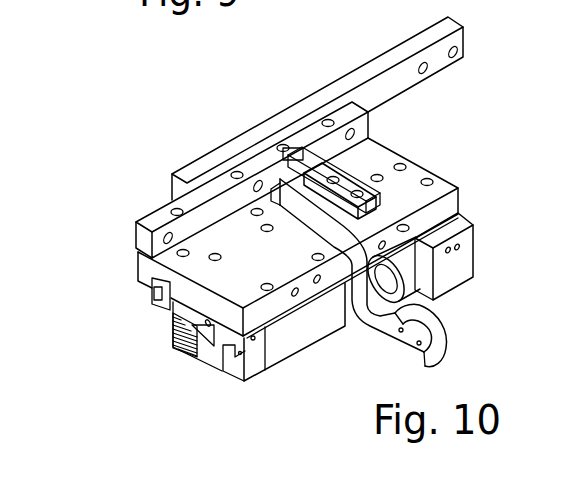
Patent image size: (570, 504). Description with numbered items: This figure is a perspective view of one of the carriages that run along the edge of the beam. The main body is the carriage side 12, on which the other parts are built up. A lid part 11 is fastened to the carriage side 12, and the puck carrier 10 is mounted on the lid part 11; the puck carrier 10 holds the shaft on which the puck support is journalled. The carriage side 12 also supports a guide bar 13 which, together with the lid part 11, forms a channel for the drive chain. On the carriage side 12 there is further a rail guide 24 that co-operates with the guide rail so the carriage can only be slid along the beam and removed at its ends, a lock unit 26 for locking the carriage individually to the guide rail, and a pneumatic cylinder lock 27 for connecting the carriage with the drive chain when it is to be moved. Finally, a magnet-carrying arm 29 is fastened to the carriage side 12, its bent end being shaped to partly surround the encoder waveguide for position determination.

The puck carrier 10 is at (365, 83).
The lid part 11 is at (157, 217).
The carriage side 12 is at (177, 263).
The guide bar 13 is at (173, 294).
The rail guide 24 is at (237, 357).
The lock unit 26 is at (443, 275).
The cylinder lock 27 is at (350, 188).
The magnet-carrying arm 29 is at (378, 327).